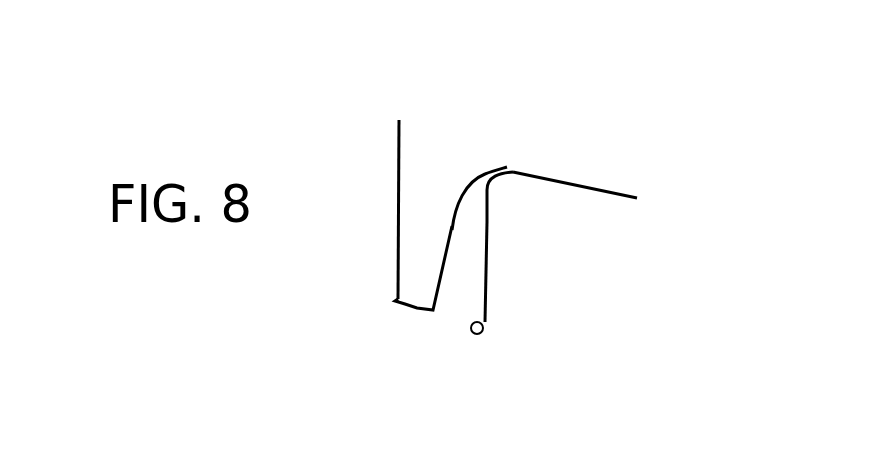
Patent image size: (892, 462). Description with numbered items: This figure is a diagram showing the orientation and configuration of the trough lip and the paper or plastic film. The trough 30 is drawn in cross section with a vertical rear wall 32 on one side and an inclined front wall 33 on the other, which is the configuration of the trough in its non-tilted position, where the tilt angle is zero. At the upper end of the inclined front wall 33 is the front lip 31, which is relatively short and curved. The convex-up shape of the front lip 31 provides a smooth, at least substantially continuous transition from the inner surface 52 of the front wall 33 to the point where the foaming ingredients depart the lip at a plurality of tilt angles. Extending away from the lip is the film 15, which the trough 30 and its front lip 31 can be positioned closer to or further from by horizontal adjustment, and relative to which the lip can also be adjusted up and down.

The trough 30 is at (418, 118).
The vertical rear wall 32 is at (398, 167).
The inclined front wall 33 is at (445, 271).
The inner surface 52 is at (476, 176).
The front lip 31 is at (505, 167).
The film 15 is at (593, 187).